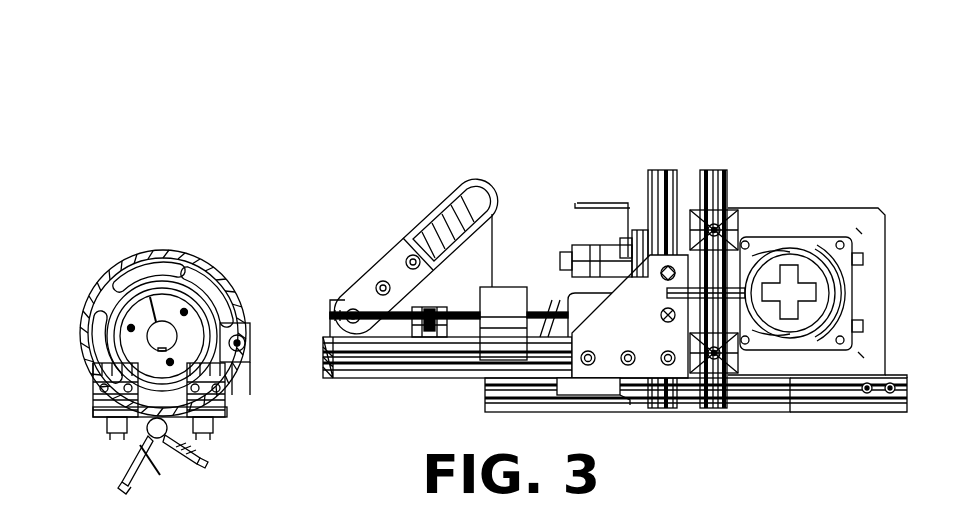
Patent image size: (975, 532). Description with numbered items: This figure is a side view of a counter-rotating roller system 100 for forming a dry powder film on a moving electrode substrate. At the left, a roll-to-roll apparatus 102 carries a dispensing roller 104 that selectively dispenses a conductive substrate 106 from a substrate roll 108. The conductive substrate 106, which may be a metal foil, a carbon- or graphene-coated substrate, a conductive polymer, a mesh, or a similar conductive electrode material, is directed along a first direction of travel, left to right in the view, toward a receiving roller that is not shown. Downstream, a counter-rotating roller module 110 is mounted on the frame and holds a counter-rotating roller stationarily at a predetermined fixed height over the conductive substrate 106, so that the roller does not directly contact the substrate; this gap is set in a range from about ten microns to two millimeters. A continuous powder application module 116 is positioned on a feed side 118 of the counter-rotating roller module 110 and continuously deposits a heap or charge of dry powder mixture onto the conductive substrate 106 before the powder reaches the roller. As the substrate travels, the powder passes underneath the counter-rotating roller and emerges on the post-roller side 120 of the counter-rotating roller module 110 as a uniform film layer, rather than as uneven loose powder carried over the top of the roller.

The counter-rotating roller system 100 is at (918, 30).
The roll-to-roll apparatus 102 is at (108, 75).
The dispensing roller 104 is at (143, 333).
The conductive substrate 106 is at (470, 188).
The substrate roll 108 is at (133, 298).
The counter-rotating roller module 110 is at (887, 125).
The continuous powder application module 116 is at (712, 170).
The feed side 118 is at (788, 420).
The post-roller side 120 is at (792, 420).